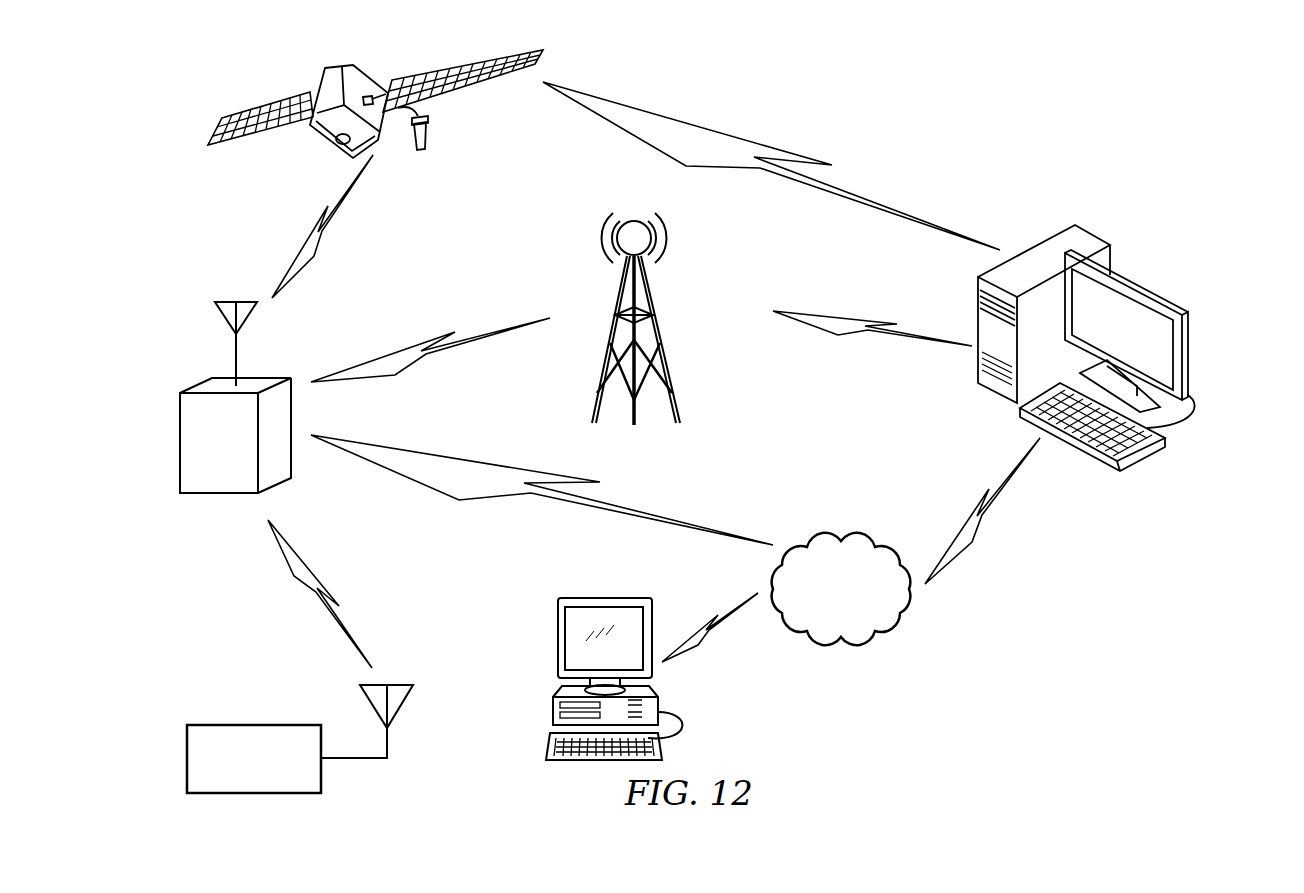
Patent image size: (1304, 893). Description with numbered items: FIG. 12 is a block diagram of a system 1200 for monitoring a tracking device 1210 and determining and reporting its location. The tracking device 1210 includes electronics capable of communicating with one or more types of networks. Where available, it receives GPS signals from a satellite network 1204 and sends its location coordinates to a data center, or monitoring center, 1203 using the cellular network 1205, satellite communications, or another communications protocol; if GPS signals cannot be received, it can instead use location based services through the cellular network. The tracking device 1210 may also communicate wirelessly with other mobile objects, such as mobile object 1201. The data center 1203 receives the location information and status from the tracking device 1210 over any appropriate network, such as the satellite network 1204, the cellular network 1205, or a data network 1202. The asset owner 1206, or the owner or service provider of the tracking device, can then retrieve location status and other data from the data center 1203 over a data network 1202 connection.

The asset monitoring system 1200 is at (996, 128).
The mobile object 1201 is at (300, 739).
The data network 1202 is at (841, 589).
The data center 1203 is at (1190, 367).
The satellite network 1204 is at (321, 140).
The cellular network 1205 is at (616, 290).
The asset owner 1206 is at (553, 710).
The tracking device 1210 is at (180, 447).